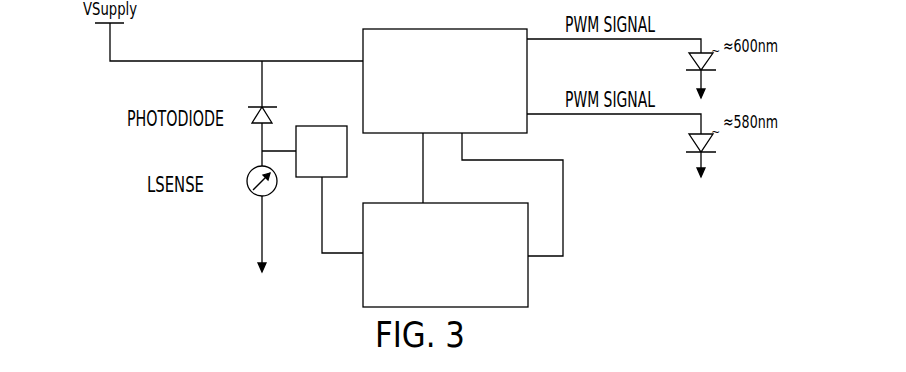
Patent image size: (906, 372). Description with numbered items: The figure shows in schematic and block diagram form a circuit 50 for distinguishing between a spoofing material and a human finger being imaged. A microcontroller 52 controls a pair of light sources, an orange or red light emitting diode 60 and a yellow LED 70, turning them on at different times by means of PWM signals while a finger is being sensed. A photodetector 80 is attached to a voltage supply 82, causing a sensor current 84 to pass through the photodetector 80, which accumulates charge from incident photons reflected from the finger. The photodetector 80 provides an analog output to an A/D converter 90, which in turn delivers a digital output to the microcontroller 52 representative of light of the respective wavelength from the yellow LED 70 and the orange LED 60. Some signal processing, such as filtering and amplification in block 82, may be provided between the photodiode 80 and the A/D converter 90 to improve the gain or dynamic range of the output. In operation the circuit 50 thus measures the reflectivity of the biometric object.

The circuit 50 is at (673, 272).
The microcontroller 52 is at (528, 82).
The orange or red light emitting diode 60 is at (693, 58).
The yellow LED 70 is at (693, 140).
The photodetector 80 is at (268, 118).
The voltage supply 82 is at (110, 48).
The sensor current 84 is at (261, 222).
The A/D converter 90 is at (528, 292).